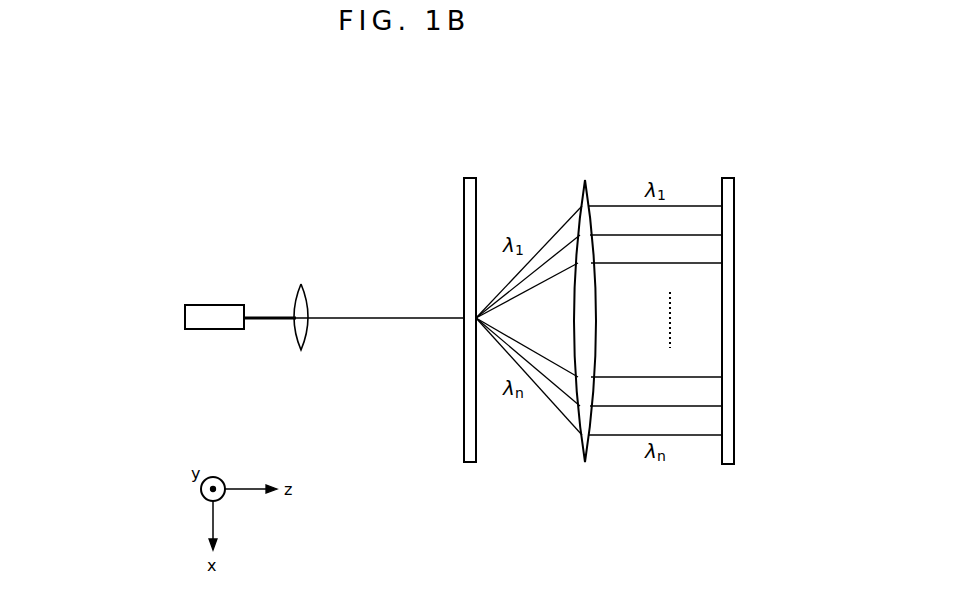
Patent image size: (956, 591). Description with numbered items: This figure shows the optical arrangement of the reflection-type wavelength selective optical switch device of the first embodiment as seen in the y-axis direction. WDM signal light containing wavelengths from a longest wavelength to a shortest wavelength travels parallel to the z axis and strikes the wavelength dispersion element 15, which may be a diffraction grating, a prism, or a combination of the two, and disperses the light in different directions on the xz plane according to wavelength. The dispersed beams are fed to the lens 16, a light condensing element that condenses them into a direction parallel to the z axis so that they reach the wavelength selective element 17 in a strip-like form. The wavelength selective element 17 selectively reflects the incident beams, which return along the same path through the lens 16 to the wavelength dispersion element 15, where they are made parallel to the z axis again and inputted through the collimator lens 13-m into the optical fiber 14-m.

The optical fiber 14-m is at (208, 305).
The collimator lens 13-m is at (295, 308).
The wavelength dispersion element 15 is at (482, 180).
The lens 16 is at (592, 180).
The wavelength selective element 17 is at (737, 180).